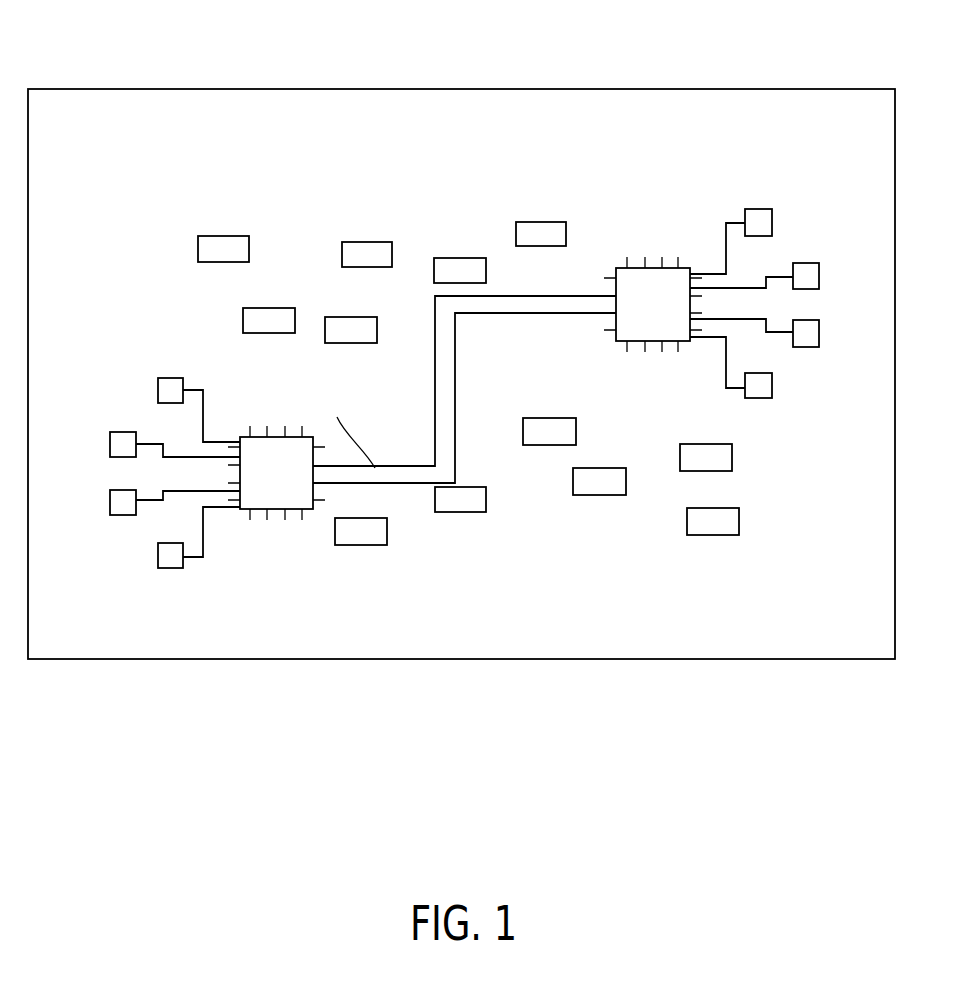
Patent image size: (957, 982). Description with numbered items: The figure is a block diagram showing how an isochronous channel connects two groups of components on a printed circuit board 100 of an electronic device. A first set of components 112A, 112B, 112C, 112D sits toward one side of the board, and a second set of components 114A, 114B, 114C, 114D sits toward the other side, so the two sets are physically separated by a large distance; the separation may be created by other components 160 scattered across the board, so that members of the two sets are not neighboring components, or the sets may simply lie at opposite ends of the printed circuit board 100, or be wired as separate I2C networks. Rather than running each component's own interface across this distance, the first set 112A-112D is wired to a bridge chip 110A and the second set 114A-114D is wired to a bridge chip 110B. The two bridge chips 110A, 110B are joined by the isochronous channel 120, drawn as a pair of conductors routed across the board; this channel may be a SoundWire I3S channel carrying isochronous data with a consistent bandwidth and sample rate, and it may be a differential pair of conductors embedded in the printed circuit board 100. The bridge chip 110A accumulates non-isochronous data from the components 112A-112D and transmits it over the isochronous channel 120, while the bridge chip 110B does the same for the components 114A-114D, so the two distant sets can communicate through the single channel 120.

The printed circuit board 100 is at (238, 89).
The bridge chip 110A is at (270, 513).
The bridge chip 110B is at (650, 345).
The component of first set 112A is at (170, 378).
The component of first set 112B is at (125, 432).
The component of first set 112C is at (123, 515).
The component of first set 112D is at (170, 568).
The component of second set 114A is at (757, 209).
The component of second set 114B is at (805, 263).
The component of second set 114C is at (803, 347).
The component of second set 114D is at (753, 398).
The isochronous channel 120 is at (455, 410).
The other components 160 is at (365, 242).